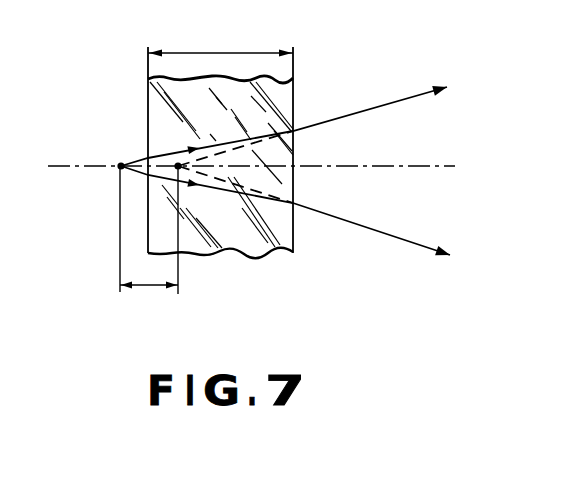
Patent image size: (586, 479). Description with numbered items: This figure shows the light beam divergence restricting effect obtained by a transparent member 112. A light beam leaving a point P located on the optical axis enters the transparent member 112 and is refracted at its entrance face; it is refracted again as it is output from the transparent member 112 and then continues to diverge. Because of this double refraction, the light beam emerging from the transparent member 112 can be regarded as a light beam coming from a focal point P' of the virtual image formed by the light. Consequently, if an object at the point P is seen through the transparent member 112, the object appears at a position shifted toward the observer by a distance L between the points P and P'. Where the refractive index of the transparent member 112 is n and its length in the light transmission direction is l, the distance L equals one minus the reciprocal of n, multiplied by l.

The transparent member 112 is at (270, 253).
The point on the optical axis P is at (89, 141).
The focal point of the virtual image P' is at (143, 131).
The refractive index of the transparent member n is at (213, 122).
The length of the transparent member in the light transmission direction l is at (220, 38).
The distance between the points P and P' L is at (149, 243).